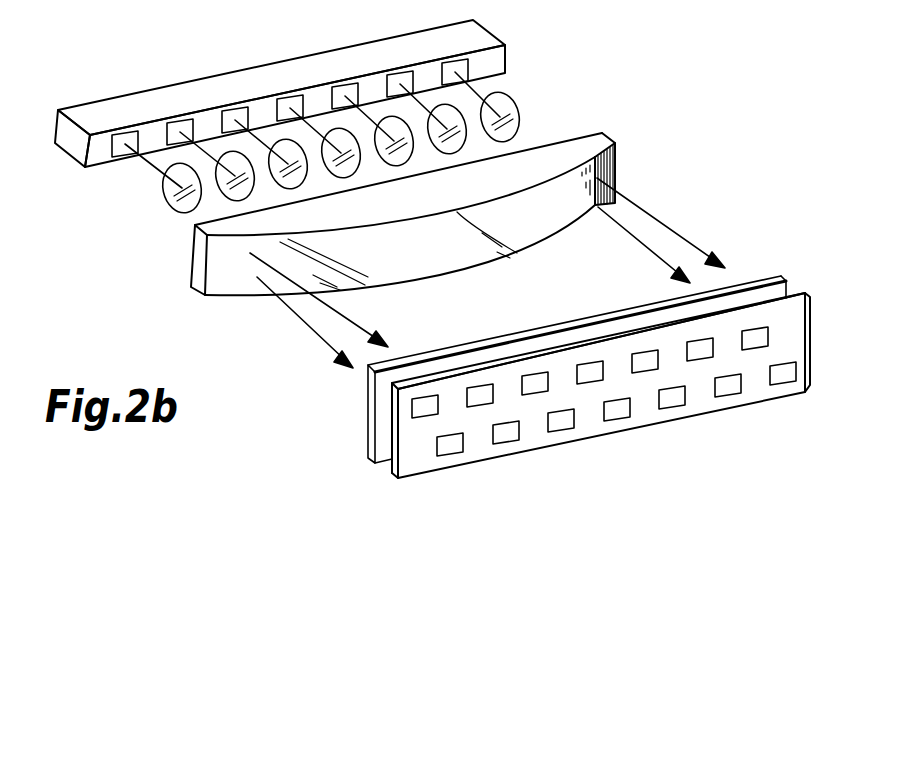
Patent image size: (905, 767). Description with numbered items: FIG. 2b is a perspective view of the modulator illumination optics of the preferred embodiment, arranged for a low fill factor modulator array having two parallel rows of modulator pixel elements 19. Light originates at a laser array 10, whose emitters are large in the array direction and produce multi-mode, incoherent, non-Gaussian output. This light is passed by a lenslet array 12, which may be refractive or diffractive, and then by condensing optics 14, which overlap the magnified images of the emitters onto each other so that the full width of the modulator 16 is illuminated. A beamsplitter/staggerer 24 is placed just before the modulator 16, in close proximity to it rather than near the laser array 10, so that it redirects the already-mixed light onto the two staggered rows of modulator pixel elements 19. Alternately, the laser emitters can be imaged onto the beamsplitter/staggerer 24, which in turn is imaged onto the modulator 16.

The laser array 10 is at (203, 85).
The lenslet array 12 is at (163, 200).
The condensing optics 14 is at (533, 233).
The modulator 16 is at (553, 415).
The modulator pixel elements 19 is at (412, 412).
The beamsplitter/staggerer 24 is at (758, 278).